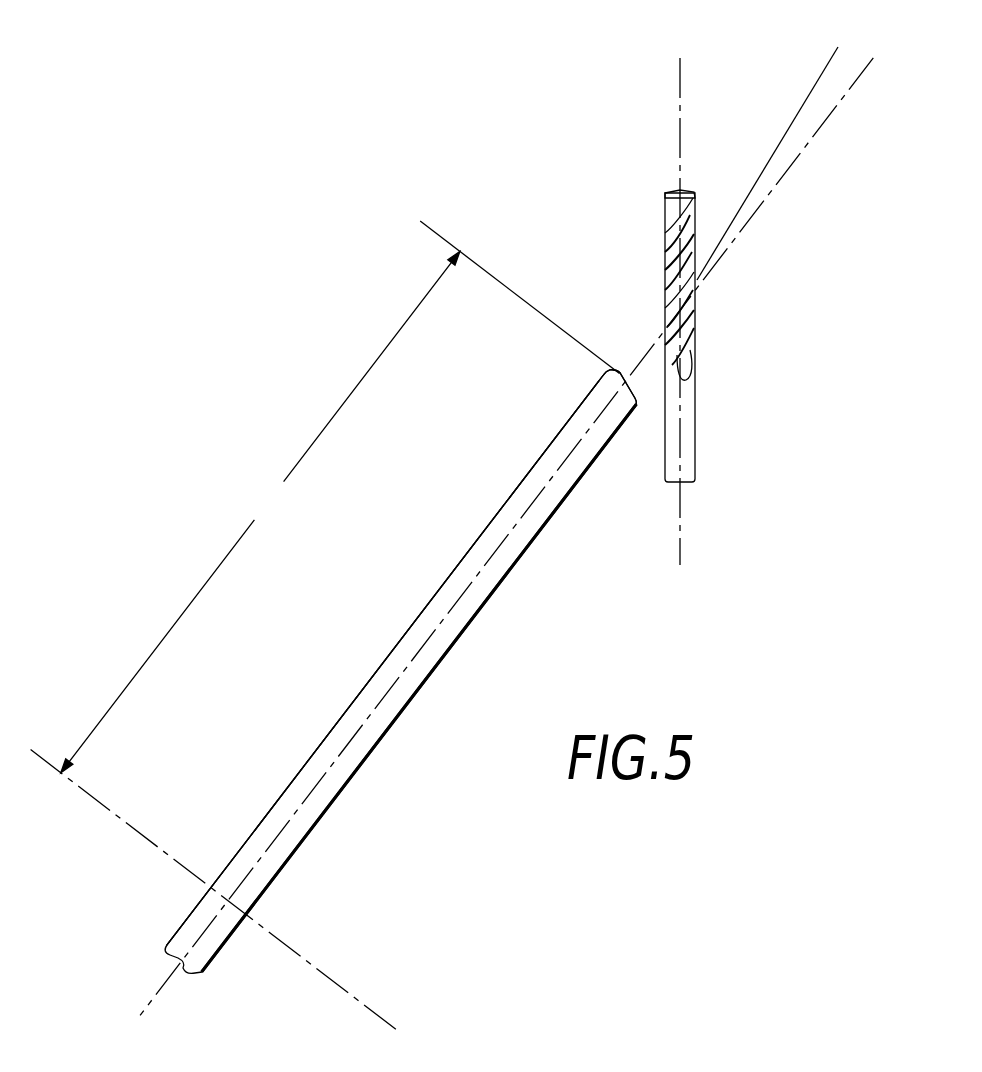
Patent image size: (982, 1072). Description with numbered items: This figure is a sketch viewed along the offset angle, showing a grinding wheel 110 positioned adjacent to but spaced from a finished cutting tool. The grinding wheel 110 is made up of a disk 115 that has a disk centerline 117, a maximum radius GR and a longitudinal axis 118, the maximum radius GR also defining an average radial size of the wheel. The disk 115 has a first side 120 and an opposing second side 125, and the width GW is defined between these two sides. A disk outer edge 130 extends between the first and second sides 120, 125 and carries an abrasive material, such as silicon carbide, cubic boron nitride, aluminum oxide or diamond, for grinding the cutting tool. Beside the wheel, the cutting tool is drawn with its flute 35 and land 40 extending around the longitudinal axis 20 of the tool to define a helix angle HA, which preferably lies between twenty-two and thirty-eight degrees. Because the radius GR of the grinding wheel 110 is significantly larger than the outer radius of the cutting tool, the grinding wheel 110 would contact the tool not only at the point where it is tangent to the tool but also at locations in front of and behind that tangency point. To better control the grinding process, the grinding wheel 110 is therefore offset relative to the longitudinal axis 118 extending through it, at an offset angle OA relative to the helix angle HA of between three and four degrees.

The longitudinal axis 20 is at (676, 100).
The flute 35 is at (697, 283).
The land 40 is at (697, 313).
The grinding wheel 110 is at (343, 707).
The disk 115 is at (548, 460).
The disk centerline 117 is at (33, 748).
The longitudinal axis 118 is at (793, 163).
The first side 120 is at (472, 545).
The second side 125 is at (430, 678).
The disk outer edge 130 is at (619, 376).
The maximum radius GR is at (340, 497).
The width GW is at (285, 793).
The helix angle HA is at (800, 110).
The offset angle OA is at (775, 33).